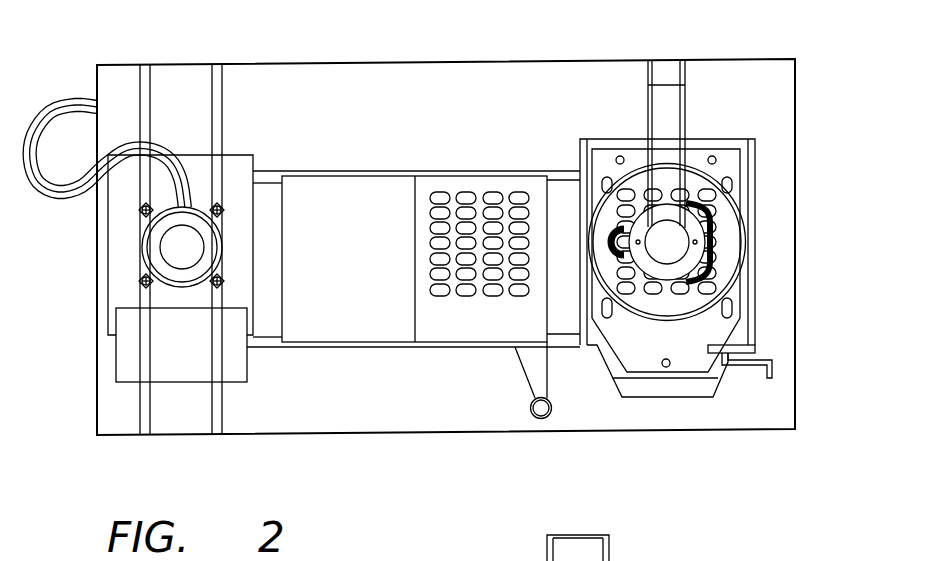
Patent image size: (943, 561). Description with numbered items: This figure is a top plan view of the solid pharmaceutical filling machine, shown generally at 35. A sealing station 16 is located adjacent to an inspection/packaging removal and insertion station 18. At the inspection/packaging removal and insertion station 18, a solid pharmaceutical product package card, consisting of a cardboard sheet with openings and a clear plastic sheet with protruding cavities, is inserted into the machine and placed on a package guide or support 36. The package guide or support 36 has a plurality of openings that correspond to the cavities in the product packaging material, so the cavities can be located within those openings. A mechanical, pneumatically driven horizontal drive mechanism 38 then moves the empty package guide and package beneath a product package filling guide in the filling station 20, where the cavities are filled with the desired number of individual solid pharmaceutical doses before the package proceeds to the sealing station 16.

The sealing station 16 is at (118, 237).
The inspection/packaging removal and insertion station 18 is at (373, 198).
The filling station 20 is at (702, 243).
The filling station top plan view 35 is at (748, 487).
The package guide or support 36 is at (452, 183).
The horizontal drive mechanism 38 is at (265, 178).